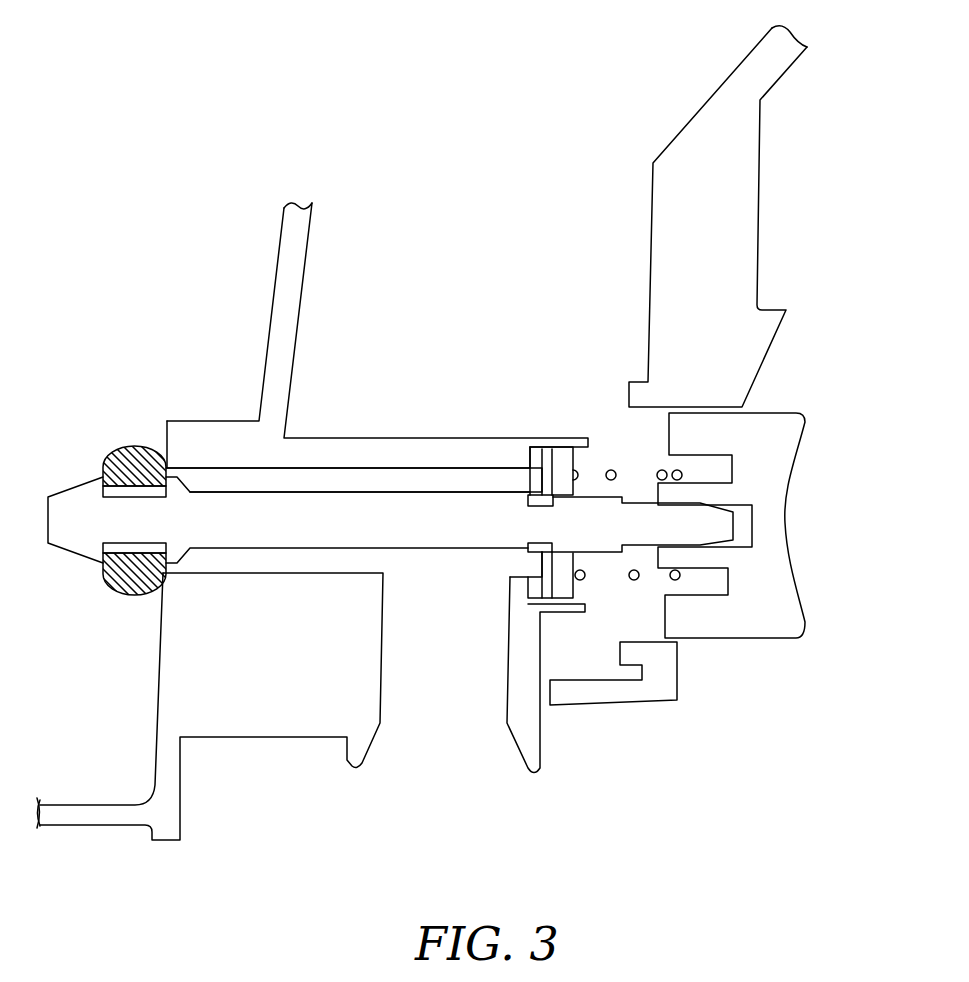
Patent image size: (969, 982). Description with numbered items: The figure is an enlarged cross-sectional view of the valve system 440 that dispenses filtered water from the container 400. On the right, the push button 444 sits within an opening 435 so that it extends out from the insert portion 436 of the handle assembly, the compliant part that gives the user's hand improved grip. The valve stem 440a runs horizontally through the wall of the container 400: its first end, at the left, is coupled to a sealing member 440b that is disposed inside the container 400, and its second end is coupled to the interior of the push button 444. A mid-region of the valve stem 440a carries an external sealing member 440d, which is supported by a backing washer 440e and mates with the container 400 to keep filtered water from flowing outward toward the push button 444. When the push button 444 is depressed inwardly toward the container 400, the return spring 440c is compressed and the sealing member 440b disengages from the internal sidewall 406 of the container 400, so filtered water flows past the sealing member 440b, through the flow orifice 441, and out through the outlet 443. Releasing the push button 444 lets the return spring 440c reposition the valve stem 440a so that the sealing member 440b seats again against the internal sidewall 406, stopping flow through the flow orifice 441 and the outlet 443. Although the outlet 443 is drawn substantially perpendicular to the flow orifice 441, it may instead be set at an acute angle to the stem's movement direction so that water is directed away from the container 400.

The container 400 is at (276, 291).
The internal sidewall 406 is at (128, 676).
The opening 435 is at (712, 373).
The insert portion 436 is at (745, 208).
The valve system 440 is at (486, 155).
The valve stem 440a is at (389, 481).
The sealing member 440b is at (133, 447).
The return spring 440c is at (612, 467).
The external sealing member 440d is at (520, 493).
The backing washer 440e is at (540, 565).
The flow orifice 441 is at (205, 563).
The outlet 443 is at (437, 757).
The push button 444 is at (788, 570).